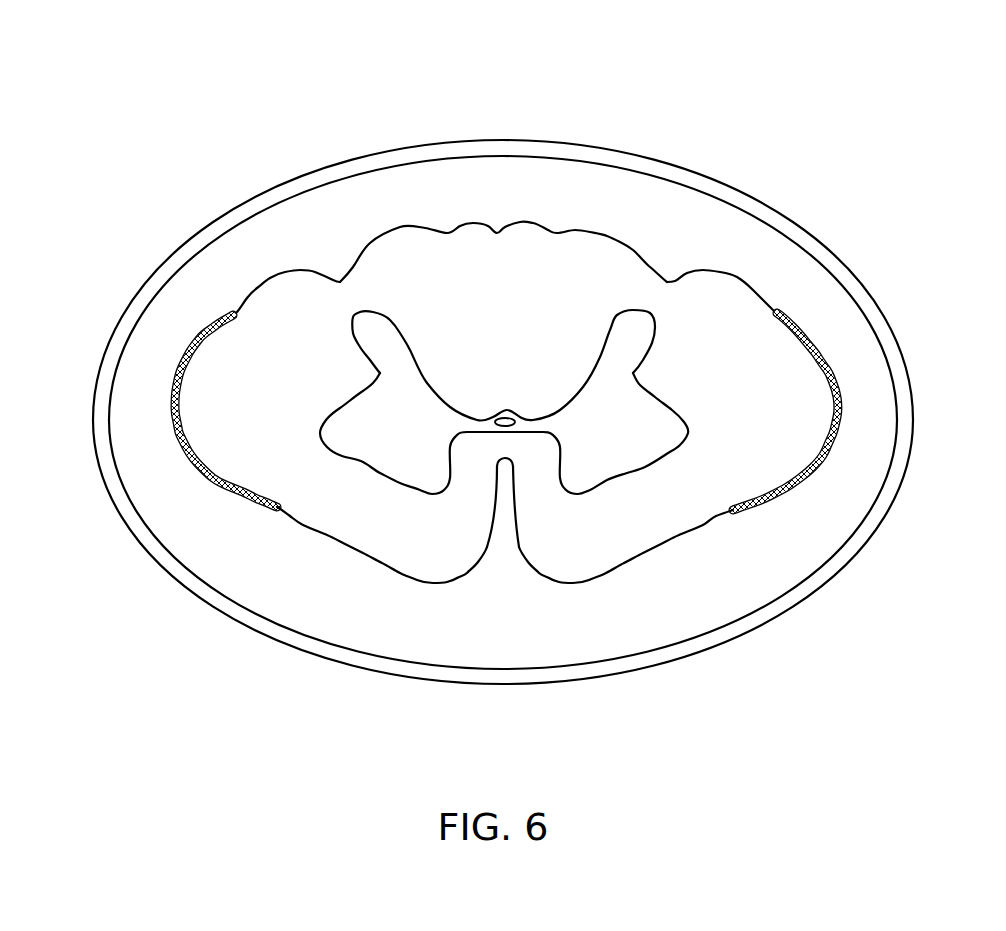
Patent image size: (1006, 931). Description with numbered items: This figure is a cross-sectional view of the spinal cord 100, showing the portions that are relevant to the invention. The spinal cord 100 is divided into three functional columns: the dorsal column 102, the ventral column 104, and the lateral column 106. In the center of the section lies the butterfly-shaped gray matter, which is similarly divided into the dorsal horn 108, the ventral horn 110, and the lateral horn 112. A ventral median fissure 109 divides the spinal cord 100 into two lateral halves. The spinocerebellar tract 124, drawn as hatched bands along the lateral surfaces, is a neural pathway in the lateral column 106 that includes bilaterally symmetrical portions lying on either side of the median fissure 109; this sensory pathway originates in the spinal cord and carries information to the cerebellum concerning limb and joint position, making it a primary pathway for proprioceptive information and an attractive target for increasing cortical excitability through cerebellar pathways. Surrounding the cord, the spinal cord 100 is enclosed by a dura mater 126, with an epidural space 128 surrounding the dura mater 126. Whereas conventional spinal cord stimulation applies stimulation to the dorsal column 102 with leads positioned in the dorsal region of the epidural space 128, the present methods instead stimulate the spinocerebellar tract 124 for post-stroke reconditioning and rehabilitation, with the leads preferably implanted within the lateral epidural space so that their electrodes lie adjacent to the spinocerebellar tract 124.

The spinal cord 100 is at (776, 108).
The dorsal column 102 is at (493, 250).
The ventral column 104 is at (460, 565).
The lateral column 106 is at (267, 368).
The dorsal horn 108 is at (385, 347).
The ventral median fissure 109 is at (505, 513).
The ventral horn 110 is at (403, 462).
The lateral horn 112 is at (347, 435).
The spinocerebellar tract 124 is at (200, 330).
The dura mater 126 is at (766, 613).
The epidural space 128 is at (884, 609).